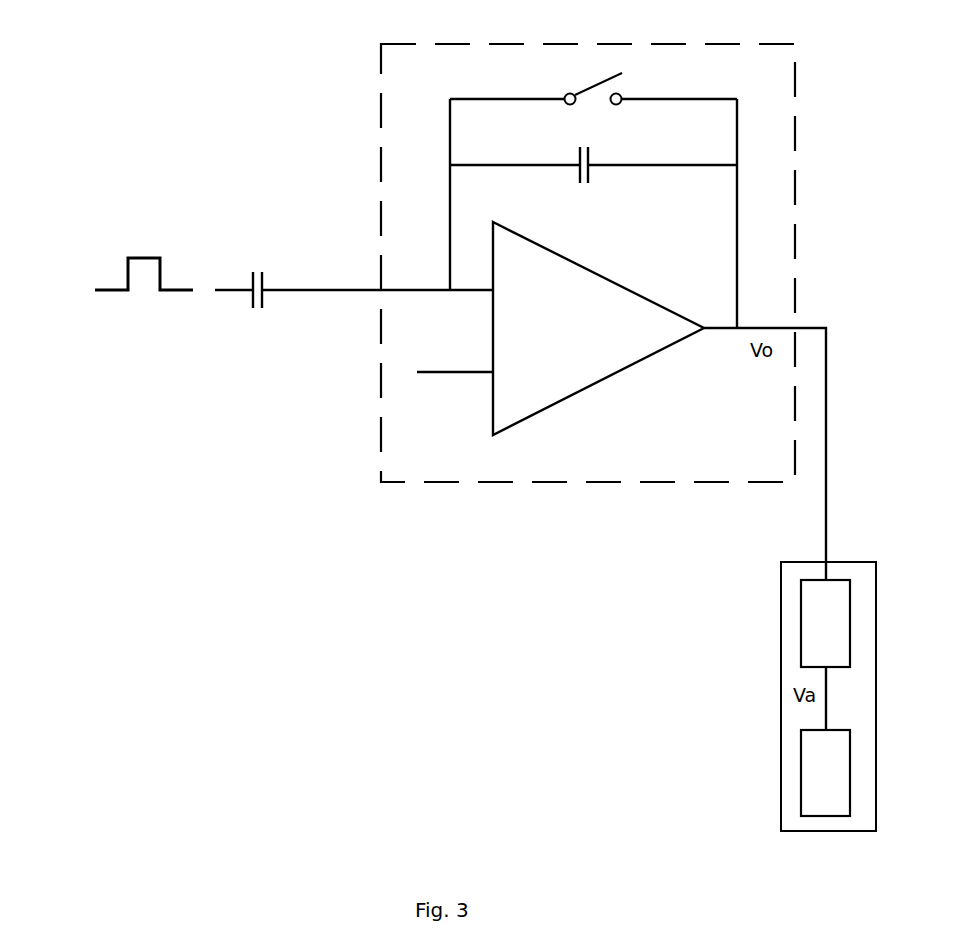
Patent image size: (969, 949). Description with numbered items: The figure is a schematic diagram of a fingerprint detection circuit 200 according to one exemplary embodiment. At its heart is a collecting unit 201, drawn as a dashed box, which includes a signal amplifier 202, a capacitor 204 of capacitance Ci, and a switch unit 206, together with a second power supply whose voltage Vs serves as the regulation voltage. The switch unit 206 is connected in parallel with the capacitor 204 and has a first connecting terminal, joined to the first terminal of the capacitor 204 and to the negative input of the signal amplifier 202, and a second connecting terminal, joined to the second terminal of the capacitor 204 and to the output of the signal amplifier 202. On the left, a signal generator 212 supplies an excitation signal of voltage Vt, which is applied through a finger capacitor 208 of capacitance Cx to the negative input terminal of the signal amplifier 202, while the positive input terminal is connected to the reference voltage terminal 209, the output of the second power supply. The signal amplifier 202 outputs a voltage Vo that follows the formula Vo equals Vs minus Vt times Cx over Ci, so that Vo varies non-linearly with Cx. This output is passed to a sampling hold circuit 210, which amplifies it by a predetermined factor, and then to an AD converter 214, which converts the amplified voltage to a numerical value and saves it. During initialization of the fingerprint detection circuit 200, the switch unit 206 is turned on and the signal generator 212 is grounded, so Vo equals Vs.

The fingerprint detection circuit 200 is at (66, 40).
The collecting unit 201 is at (382, 136).
The signal amplifier 202 is at (608, 378).
The capacitor 204 is at (590, 175).
The switch unit 206 is at (556, 74).
The finger capacitor 208 is at (256, 328).
The reference voltage terminal 209 is at (414, 357).
The sampling hold circuit 210 is at (801, 625).
The signal generator 212 is at (136, 232).
The AD converter 214 is at (801, 755).